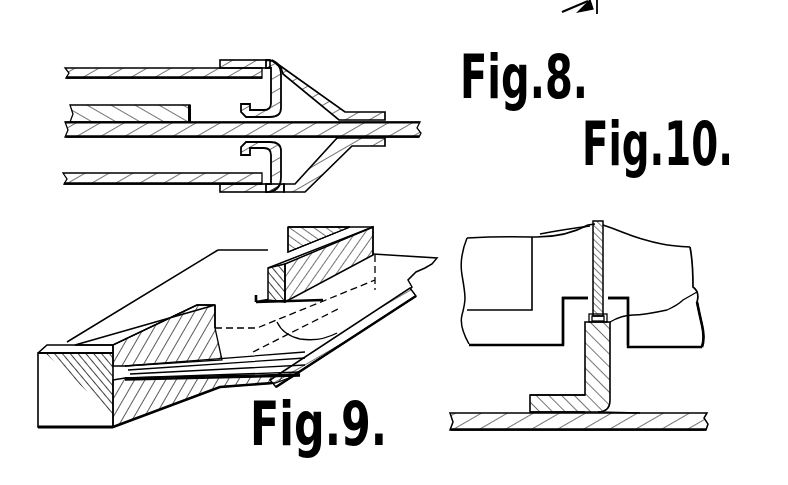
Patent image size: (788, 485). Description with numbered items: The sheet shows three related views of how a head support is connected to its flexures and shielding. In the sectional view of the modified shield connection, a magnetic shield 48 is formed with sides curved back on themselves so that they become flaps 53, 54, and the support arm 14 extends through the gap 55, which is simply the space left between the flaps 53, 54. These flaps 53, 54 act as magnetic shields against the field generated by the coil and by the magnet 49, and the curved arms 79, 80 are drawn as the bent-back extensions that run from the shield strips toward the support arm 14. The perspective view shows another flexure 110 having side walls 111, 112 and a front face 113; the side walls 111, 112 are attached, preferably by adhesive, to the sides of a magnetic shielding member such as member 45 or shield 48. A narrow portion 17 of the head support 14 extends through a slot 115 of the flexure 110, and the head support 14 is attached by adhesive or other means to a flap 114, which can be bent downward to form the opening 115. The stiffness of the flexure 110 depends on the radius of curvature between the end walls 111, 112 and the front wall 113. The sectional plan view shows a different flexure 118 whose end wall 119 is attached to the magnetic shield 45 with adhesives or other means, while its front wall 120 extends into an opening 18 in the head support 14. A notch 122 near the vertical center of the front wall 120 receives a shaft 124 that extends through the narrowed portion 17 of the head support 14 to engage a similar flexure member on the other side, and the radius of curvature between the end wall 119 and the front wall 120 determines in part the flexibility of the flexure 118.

In FIG. 8, the magnetic shield 48 is at (90, 67).
In FIG. 8, the magnet 49 is at (162, 107).
In FIG. 10, the magnet 49 is at (500, 252).
In FIG. 8, the flap 53 is at (276, 61).
In FIG. 8, the upper clip arm 79 is at (323, 93).
In FIG. 8, the support arm 14 is at (400, 125).
In FIG. 9, the support arm 14 is at (405, 263).
In FIG. 10, the support arm 14 is at (670, 250).
In FIG. 8, the gap 55 is at (253, 152).
In FIG. 8, the flap 54 is at (312, 182).
In FIG. 8, the lower clip arm 80 is at (346, 152).
In FIG. 9, the narrow portion 17 is at (170, 283).
In FIG. 10, the narrow portion 17 is at (572, 240).
In FIG. 9, the side wall 112 is at (53, 373).
In FIG. 9, the front face 113 is at (165, 390).
In FIG. 9, the flap 114 is at (337, 345).
In FIG. 9, the slot 115 is at (268, 298).
In FIG. 9, the side wall 111 is at (300, 247).
In FIG. 9, the flexure 110 is at (377, 228).
In FIG. 10, the shaft 124 is at (603, 226).
In FIG. 10, the notch 122 is at (697, 292).
In FIG. 10, the opening 18 is at (575, 333).
In FIG. 10, the front wall 120 is at (613, 368).
In FIG. 10, the end wall 119 is at (558, 405).
In FIG. 10, the flexure 118 is at (628, 408).
In FIG. 10, the magnetic shield 45 is at (673, 427).